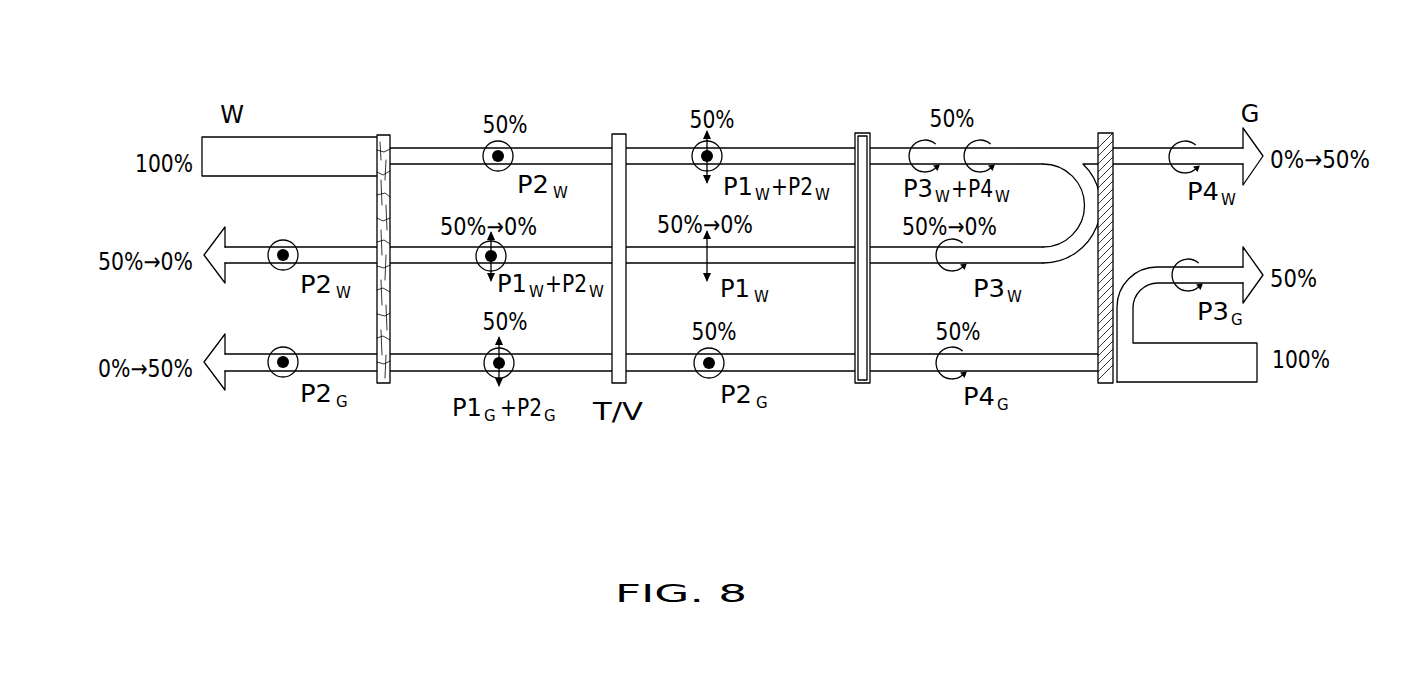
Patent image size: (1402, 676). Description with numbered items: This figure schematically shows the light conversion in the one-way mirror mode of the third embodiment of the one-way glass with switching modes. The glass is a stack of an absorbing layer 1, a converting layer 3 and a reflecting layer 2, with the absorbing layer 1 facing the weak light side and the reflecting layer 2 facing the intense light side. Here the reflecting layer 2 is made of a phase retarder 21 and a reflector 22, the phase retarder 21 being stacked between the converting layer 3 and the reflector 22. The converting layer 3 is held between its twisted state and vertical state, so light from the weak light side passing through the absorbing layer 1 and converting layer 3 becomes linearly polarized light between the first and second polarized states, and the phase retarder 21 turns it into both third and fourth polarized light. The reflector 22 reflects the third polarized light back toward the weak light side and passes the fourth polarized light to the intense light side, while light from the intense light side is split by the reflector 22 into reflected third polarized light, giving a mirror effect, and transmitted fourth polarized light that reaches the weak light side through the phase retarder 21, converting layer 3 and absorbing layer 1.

The absorbing layer 1 is at (381, 135).
The reflecting layer 2 is at (875, 43).
The converting layer 3 is at (618, 134).
The phase retarder 21 is at (862, 133).
The reflector 22 is at (1105, 133).